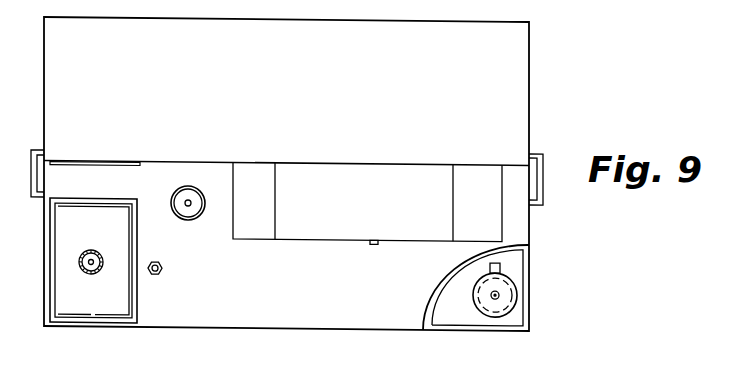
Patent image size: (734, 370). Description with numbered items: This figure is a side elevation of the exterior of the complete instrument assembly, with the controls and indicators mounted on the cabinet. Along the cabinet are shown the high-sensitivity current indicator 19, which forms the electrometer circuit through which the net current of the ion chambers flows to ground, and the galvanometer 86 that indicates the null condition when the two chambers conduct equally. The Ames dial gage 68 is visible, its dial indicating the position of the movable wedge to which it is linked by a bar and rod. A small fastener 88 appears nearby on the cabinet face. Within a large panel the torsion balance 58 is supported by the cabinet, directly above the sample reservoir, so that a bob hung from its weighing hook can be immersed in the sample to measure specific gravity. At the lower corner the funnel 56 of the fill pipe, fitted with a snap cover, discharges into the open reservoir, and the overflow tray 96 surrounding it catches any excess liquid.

The high-sensitivity current indicator 19 is at (96, 166).
The funnel 56 is at (508, 273).
The torsion balance 58 is at (345, 172).
The Ames dial gage 68 is at (199, 171).
The galvanometer 86 is at (120, 242).
The hex nut 88 is at (163, 267).
The overflow tray 96 is at (443, 283).